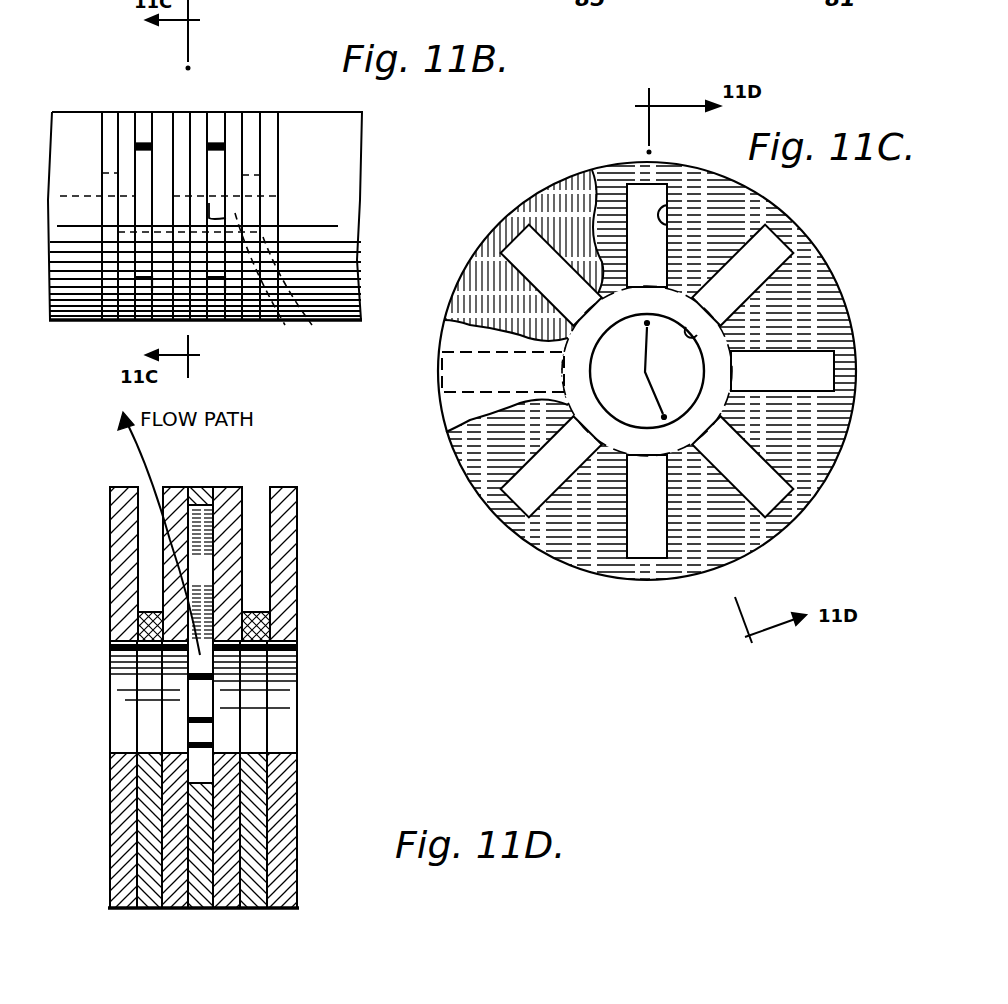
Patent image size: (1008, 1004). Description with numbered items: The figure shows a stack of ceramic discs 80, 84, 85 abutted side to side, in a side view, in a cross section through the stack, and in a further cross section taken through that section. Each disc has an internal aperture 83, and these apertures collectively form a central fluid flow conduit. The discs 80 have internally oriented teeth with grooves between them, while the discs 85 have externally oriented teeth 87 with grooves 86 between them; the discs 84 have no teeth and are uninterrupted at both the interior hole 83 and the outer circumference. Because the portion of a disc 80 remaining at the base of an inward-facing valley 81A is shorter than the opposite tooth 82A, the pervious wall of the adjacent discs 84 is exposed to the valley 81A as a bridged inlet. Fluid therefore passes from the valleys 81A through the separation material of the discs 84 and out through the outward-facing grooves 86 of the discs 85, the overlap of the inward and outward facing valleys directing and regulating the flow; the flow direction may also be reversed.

In FIG. 11B, the ceramic disc 80 is at (180, 112).
In FIG. 11C, the ceramic disc 80 is at (810, 290).
In FIG. 11D, the ceramic disc 80 is at (200, 490).
In FIG. 11C, the bridged inlet 81A is at (678, 229).
In FIG. 11D, the bridged inlet 81A is at (205, 545).
In FIG. 11C, the tooth 82A is at (702, 566).
In FIG. 11D, the tooth 82A is at (202, 912).
In FIG. 11B, the internal aperture 83 is at (122, 198).
In FIG. 11C, the internal aperture 83 is at (718, 340).
In FIG. 11D, the internal aperture 83 is at (130, 705).
In FIG. 11B, the ceramic disc 84 is at (124, 112).
In FIG. 11C, the ceramic disc 84 is at (424, 454).
In FIG. 11D, the ceramic disc 84 is at (122, 500).
In FIG. 11B, the ceramic disc 85 is at (144, 112).
In FIG. 11C, the ceramic disc 85 is at (470, 286).
In FIG. 11D, the ceramic disc 85 is at (132, 618).
In FIG. 11B, the groove 86 is at (220, 212).
In FIG. 11C, the groove 86 is at (512, 232).
In FIG. 11D, the groove 86 is at (150, 560).
In FIG. 11B, the tooth 87 is at (136, 325).
In FIG. 11C, the tooth 87 is at (557, 188).
In FIG. 11D, the tooth 87 is at (142, 808).